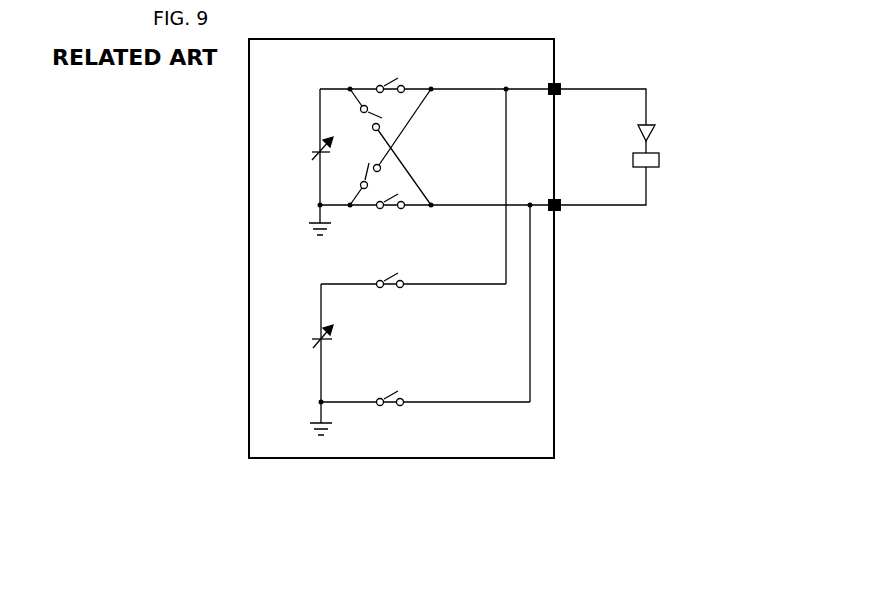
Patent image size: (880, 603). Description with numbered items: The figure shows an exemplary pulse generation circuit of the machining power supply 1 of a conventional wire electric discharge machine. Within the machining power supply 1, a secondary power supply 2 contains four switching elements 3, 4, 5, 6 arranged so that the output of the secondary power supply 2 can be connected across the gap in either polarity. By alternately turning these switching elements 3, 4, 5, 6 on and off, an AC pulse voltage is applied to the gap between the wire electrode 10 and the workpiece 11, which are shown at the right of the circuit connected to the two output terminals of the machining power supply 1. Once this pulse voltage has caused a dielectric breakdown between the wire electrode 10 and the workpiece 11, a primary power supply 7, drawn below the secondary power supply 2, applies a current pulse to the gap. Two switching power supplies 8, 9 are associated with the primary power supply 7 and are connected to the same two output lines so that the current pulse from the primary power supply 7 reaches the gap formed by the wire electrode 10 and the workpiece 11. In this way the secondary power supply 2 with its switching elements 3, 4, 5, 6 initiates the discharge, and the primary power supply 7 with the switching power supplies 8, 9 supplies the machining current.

The machining power supply 1 is at (249, 210).
The secondary power supply 2 is at (317, 150).
The switching element 3 is at (390, 80).
The switching element 4 is at (392, 211).
The switching element 5 is at (369, 127).
The switching element 6 is at (366, 172).
The primary power supply 7 is at (318, 338).
The switching power supply 8 is at (391, 293).
The switching power supply 9 is at (388, 396).
The wire electrode 10 is at (657, 128).
The workpiece 11 is at (660, 158).